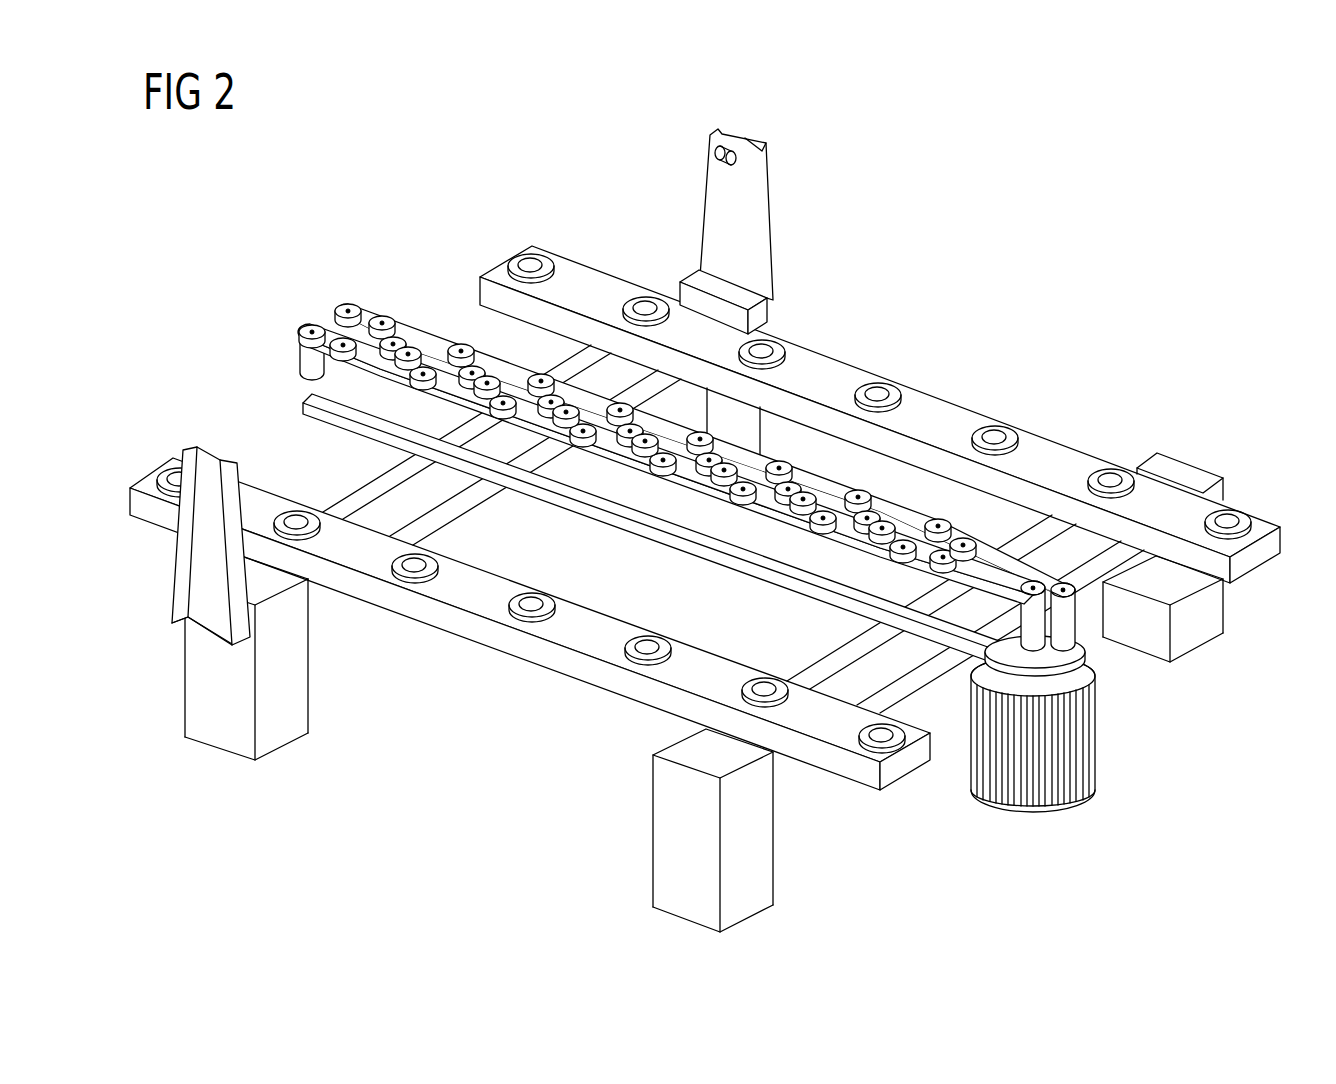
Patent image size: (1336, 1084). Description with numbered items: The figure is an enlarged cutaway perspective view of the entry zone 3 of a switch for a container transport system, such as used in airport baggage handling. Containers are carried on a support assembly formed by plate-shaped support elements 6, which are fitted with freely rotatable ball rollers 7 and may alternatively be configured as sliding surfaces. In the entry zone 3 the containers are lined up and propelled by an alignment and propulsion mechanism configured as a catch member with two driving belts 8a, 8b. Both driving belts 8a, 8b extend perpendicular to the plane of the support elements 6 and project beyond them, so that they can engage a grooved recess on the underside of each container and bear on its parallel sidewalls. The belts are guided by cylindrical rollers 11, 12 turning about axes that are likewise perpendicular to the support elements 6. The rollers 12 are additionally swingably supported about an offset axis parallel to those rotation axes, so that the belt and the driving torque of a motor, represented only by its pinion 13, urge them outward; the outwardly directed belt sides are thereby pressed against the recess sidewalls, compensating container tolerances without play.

The entry zone 3 is at (705, 530).
The support elements 6 is at (827, 367).
The ball rollers 7 is at (1233, 523).
The driving belt 8a is at (334, 316).
The driving belt 8b is at (305, 363).
The cylindrical rollers 11 is at (866, 497).
The cylindrical rollers 12 is at (787, 495).
The pinion 13 is at (1082, 733).